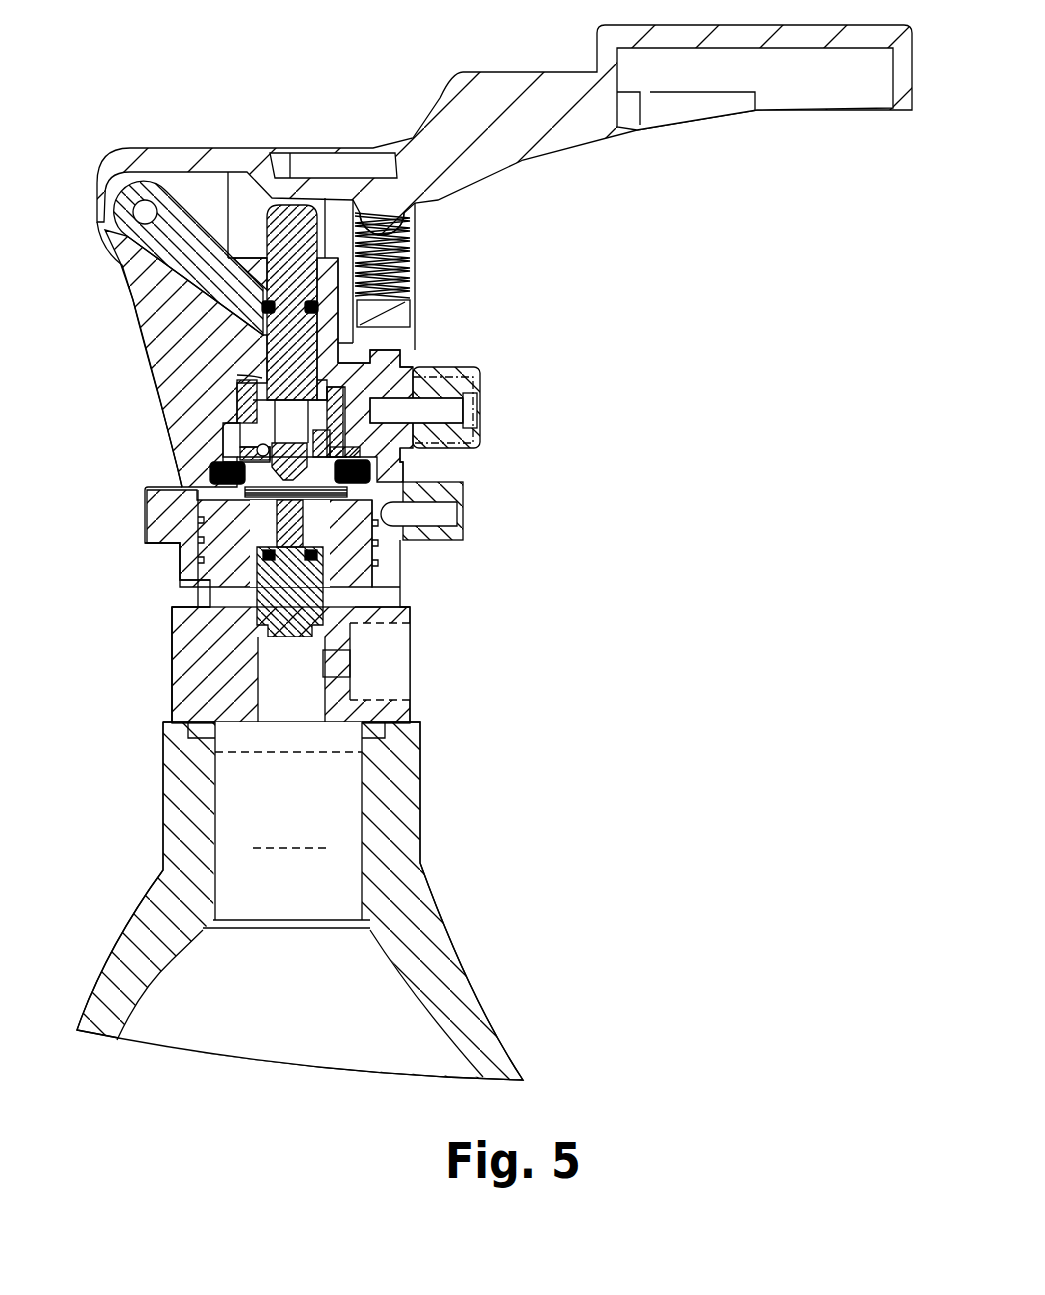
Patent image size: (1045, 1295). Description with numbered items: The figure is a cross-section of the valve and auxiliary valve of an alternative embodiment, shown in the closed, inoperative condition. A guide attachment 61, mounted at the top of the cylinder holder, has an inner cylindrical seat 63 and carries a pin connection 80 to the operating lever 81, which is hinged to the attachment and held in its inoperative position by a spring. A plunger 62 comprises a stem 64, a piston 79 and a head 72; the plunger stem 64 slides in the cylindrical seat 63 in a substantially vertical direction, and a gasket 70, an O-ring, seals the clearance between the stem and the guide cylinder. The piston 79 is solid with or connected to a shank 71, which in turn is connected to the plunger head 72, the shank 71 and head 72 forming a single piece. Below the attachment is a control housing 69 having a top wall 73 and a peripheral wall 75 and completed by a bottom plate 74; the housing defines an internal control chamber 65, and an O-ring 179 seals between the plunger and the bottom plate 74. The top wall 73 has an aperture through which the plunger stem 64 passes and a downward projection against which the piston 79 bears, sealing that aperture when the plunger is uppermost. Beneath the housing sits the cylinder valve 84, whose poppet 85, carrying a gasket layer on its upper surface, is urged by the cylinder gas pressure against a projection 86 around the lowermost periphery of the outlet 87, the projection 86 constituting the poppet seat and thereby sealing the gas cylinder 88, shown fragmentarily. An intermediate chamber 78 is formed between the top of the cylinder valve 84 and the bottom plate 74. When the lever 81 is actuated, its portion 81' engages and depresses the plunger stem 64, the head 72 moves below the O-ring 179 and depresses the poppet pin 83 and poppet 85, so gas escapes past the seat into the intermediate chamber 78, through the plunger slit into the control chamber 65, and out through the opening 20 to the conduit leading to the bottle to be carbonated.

The opening 20 is at (467, 413).
The guide attachment 61 is at (122, 283).
The plunger 62 is at (412, 268).
The inner cylindrical seat 63 is at (257, 335).
The plunger stem 64 is at (270, 215).
The internal control chamber 65 is at (275, 420).
The control housing 69 is at (348, 408).
The gasket 70 is at (265, 308).
The shank 71 is at (258, 449).
The plunger head 72 is at (405, 540).
The top wall 73 is at (347, 386).
The bottom plate 74 is at (212, 470).
The peripheral wall 75 is at (243, 393).
The intermediate chamber 78 is at (462, 495).
The piston 79 is at (265, 380).
The pin connection 80 is at (144, 212).
The operating lever 81 is at (504, 141).
The lever portion 81' is at (333, 121).
The poppet pin 83 is at (278, 518).
The cylinder valve 84 is at (170, 670).
The poppet 85 is at (318, 605).
The projection 86 is at (253, 538).
The outlet 87 is at (345, 556).
The gas cylinder 88 is at (158, 826).
The O-ring 179 is at (395, 458).